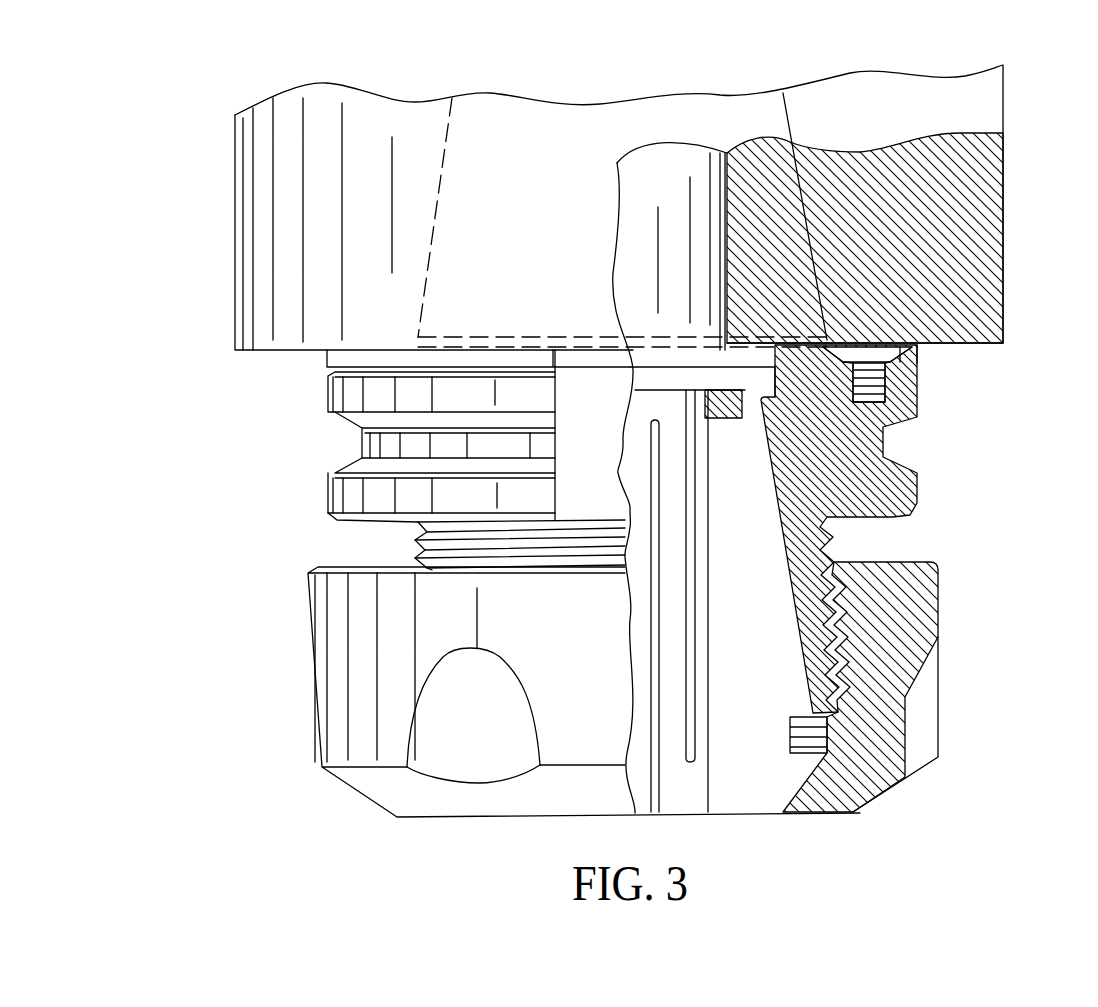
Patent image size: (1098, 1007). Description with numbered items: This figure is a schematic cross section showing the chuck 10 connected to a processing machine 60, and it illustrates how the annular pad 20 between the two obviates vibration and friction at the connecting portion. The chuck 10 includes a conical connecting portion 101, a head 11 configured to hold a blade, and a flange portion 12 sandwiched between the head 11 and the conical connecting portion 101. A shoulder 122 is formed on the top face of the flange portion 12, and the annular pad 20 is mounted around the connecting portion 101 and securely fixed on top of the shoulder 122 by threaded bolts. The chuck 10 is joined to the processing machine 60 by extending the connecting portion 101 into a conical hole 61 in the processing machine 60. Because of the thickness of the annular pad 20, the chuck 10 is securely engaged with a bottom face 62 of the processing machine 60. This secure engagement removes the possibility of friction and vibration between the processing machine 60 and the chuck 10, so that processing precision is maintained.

The chuck 10 is at (724, 91).
The conical connecting portion 101 is at (783, 93).
The processing machine 60 is at (250, 210).
The conical hole 61 is at (804, 214).
The annular pad 20 is at (961, 369).
The bottom face 62 is at (910, 370).
The shoulder 122 is at (827, 343).
The flange portion 12 is at (961, 483).
The head 11 is at (981, 703).